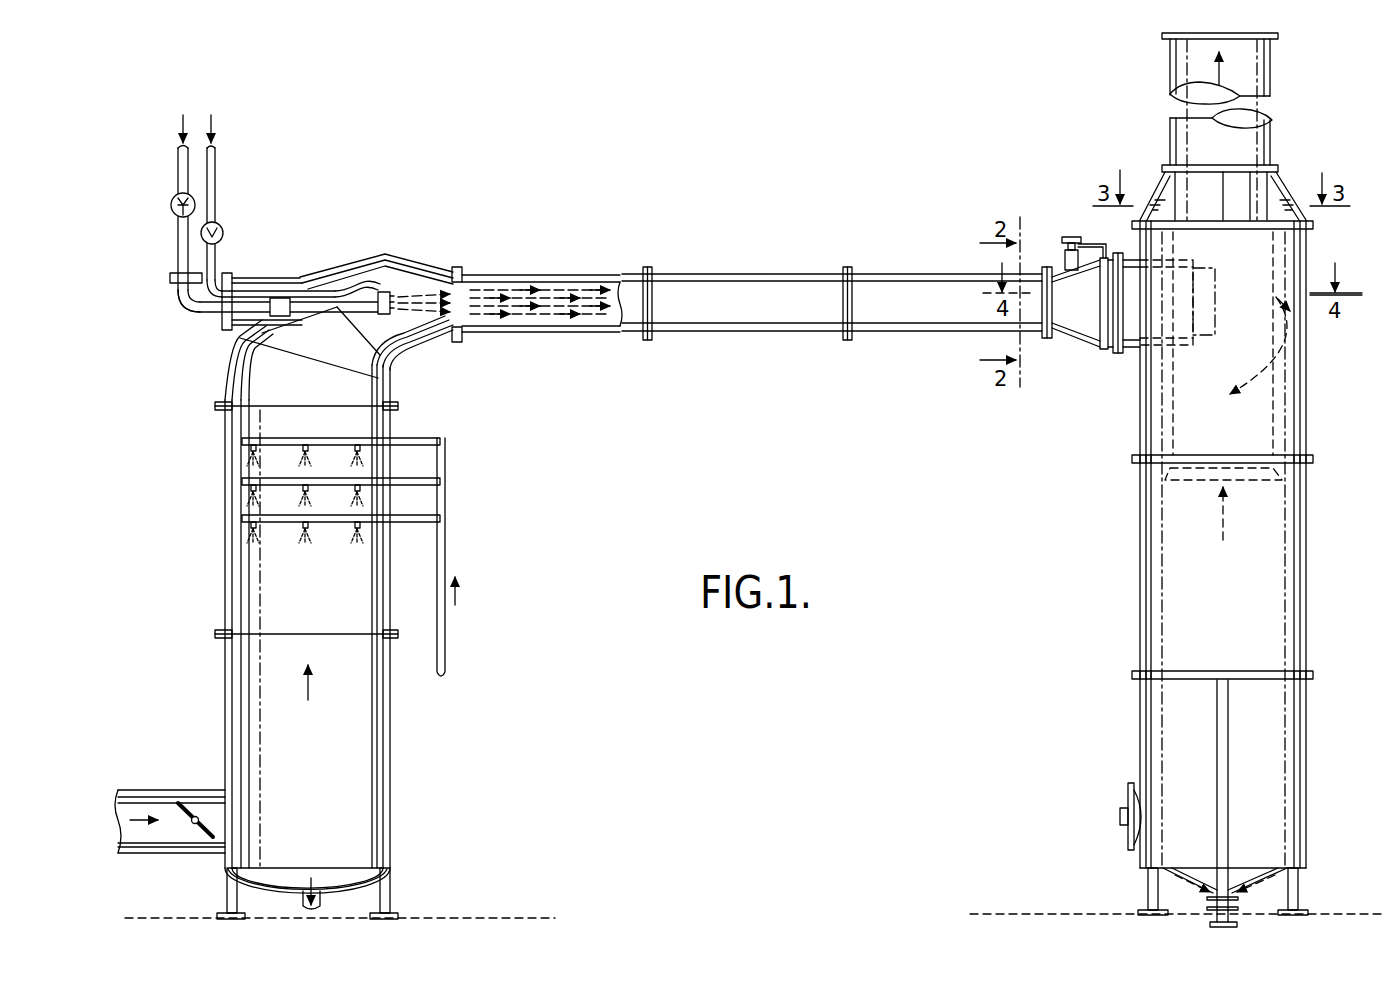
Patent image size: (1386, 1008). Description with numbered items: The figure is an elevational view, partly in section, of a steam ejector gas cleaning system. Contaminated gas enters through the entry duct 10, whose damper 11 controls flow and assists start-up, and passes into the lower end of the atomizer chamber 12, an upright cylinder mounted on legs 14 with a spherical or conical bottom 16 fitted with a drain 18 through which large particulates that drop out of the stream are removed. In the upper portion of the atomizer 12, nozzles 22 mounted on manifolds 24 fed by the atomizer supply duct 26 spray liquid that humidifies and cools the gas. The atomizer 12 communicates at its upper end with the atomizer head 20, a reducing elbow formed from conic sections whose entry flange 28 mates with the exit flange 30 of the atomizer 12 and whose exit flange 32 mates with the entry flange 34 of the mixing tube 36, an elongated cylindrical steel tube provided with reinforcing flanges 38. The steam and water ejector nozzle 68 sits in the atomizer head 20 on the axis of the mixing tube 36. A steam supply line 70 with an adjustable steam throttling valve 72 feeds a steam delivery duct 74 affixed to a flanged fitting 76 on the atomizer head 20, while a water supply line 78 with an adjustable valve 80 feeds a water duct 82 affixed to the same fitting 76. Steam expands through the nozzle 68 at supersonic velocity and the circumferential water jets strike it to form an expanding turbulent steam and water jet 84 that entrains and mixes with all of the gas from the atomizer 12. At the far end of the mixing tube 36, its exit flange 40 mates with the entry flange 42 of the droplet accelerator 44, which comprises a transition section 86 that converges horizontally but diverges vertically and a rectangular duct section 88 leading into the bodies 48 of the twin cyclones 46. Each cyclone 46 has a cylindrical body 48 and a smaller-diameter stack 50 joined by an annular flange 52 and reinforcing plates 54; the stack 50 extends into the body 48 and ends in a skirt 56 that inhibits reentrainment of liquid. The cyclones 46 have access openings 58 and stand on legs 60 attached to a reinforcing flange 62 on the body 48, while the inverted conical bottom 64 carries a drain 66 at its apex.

The entry duct 10 is at (128, 790).
The damper 11 is at (184, 806).
The atomizer chamber 12 is at (392, 749).
The legs 14 is at (392, 887).
The spherical or conical bottom 16 is at (342, 886).
The drain 18 is at (302, 903).
The atomizer head 20 is at (388, 368).
The nozzles 22 is at (302, 449).
The manifolds 24 is at (423, 441).
The atomizer supply duct 26 is at (447, 641).
The entry flange 28 is at (220, 404).
The exit flange 30 is at (218, 411).
The exit flange 32 is at (456, 342).
The entry flange 34 is at (463, 335).
The mixing tube 36 is at (627, 331).
The reinforcing flanges 38 is at (653, 338).
The exit flange 40 is at (1043, 339).
The entry flange 42 is at (1054, 339).
The droplet accelerator 44 is at (1069, 262).
The twin cyclones 46 is at (1135, 567).
The cyclone body 48 is at (1150, 619).
The stack 50 is at (1266, 81).
The annular flange 52 is at (1221, 152).
The reinforcing plates 54 is at (1286, 187).
The skirt 56 is at (1200, 484).
The access openings 58 is at (1127, 796).
The legs 60 is at (1150, 889).
The reinforcing flange 62 is at (1296, 676).
The bottom 64 is at (1187, 870).
The drain 66 is at (1233, 903).
The steam and water ejector nozzle 68 is at (391, 291).
The steam supply line 70 is at (182, 185).
The adjustable steam throttling valve 72 is at (175, 213).
The steam delivery duct 74 is at (189, 307).
The flanged fitting 76 is at (285, 278).
The water supply line 78 is at (213, 192).
The adjustable valve 80 is at (224, 235).
The water duct 82 is at (214, 264).
The steam and water jet 84 is at (527, 293).
The transition section 86 is at (1061, 268).
The rectangular duct section 88 is at (1150, 279).